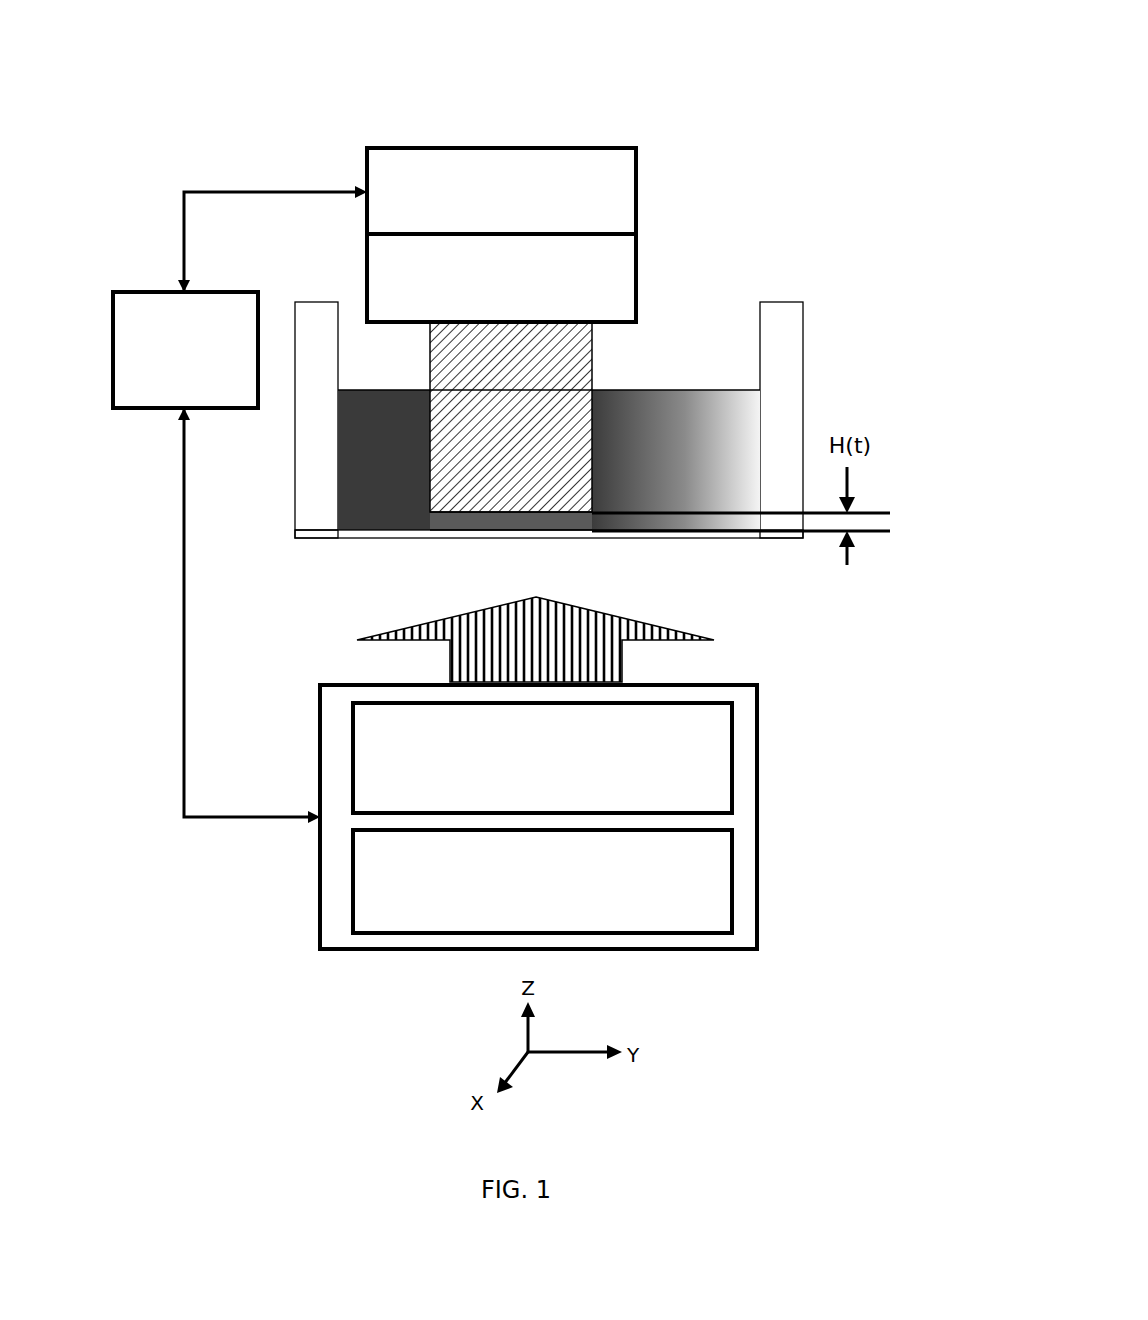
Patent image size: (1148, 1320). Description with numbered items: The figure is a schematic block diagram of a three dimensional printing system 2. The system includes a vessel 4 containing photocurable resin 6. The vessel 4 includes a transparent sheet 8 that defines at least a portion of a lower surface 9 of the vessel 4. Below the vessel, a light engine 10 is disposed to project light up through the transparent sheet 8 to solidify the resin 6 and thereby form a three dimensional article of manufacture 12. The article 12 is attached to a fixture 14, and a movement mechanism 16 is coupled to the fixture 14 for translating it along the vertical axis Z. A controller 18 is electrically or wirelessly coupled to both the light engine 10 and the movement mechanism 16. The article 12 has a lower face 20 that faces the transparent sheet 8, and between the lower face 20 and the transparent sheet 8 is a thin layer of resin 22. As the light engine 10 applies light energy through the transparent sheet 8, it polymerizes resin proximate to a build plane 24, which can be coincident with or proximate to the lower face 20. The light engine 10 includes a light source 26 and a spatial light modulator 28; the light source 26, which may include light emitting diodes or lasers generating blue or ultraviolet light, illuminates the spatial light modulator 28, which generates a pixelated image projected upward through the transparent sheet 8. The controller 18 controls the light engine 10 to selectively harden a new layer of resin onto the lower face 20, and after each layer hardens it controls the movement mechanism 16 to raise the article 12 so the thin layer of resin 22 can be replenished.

The three dimensional printing system 2 is at (682, 101).
The vessel 4 is at (827, 304).
The photocurable resin 6 is at (688, 418).
The transparent sheet 8 is at (743, 538).
The lower surface 9 is at (328, 540).
The light engine 10 is at (758, 738).
The three dimensional article of manufacture 12 is at (452, 385).
The fixture 14 is at (638, 267).
The movement mechanism 16 is at (638, 185).
The controller 18 is at (138, 411).
The lower face 20 is at (510, 513).
The thin layer of resin 22 is at (463, 523).
The build plane 24 is at (550, 513).
The light source 26 is at (733, 890).
The spatial light modulator 28 is at (733, 795).